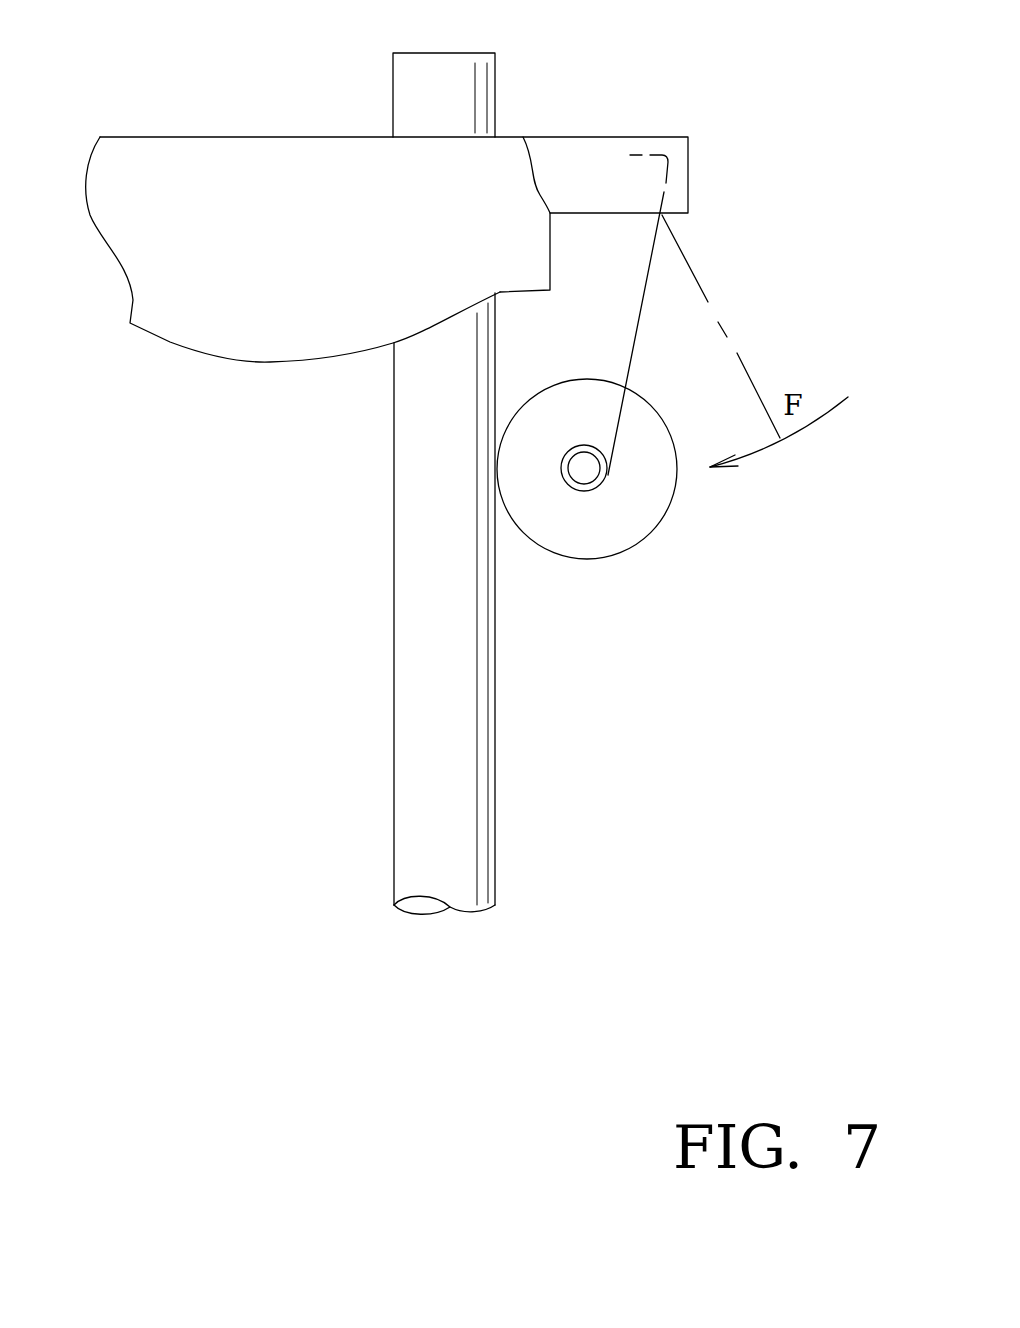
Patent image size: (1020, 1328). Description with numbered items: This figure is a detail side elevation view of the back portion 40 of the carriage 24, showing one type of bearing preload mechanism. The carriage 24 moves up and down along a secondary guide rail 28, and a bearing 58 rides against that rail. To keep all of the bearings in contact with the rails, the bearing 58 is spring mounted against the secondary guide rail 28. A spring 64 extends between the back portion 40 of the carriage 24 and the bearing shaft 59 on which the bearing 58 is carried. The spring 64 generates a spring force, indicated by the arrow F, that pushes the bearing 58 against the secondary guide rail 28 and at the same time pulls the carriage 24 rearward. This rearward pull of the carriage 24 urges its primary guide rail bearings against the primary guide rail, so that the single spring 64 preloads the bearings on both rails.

The carriage 24 is at (142, 291).
The secondary guide rail 28 is at (407, 535).
The back portion 40 is at (510, 143).
The bearing 58 is at (568, 552).
The bearing shaft 59 is at (592, 476).
The spring 64 is at (640, 310).